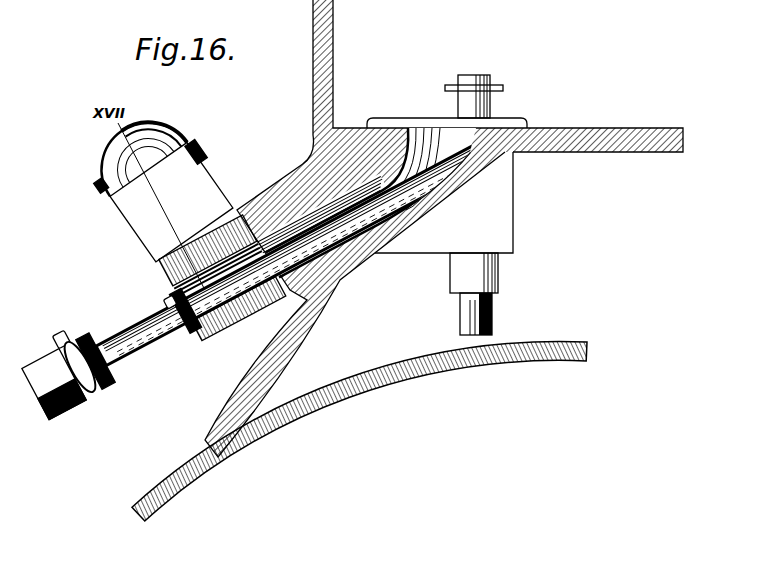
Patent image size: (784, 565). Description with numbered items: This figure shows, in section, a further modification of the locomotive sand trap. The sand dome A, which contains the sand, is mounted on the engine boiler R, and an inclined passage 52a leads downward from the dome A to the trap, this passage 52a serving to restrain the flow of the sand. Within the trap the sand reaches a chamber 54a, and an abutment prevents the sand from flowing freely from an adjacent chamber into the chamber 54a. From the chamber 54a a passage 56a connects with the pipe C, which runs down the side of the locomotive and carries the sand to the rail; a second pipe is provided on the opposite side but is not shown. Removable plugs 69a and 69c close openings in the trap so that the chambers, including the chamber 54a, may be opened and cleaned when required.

The sand dome A is at (498, 76).
The pipe C is at (48, 414).
The engine boiler R is at (398, 383).
The passage 52a is at (341, 217).
The chamber 54a is at (229, 333).
The passage 56a is at (143, 355).
The removable plug 69a is at (164, 294).
The removable plug 69c is at (112, 163).